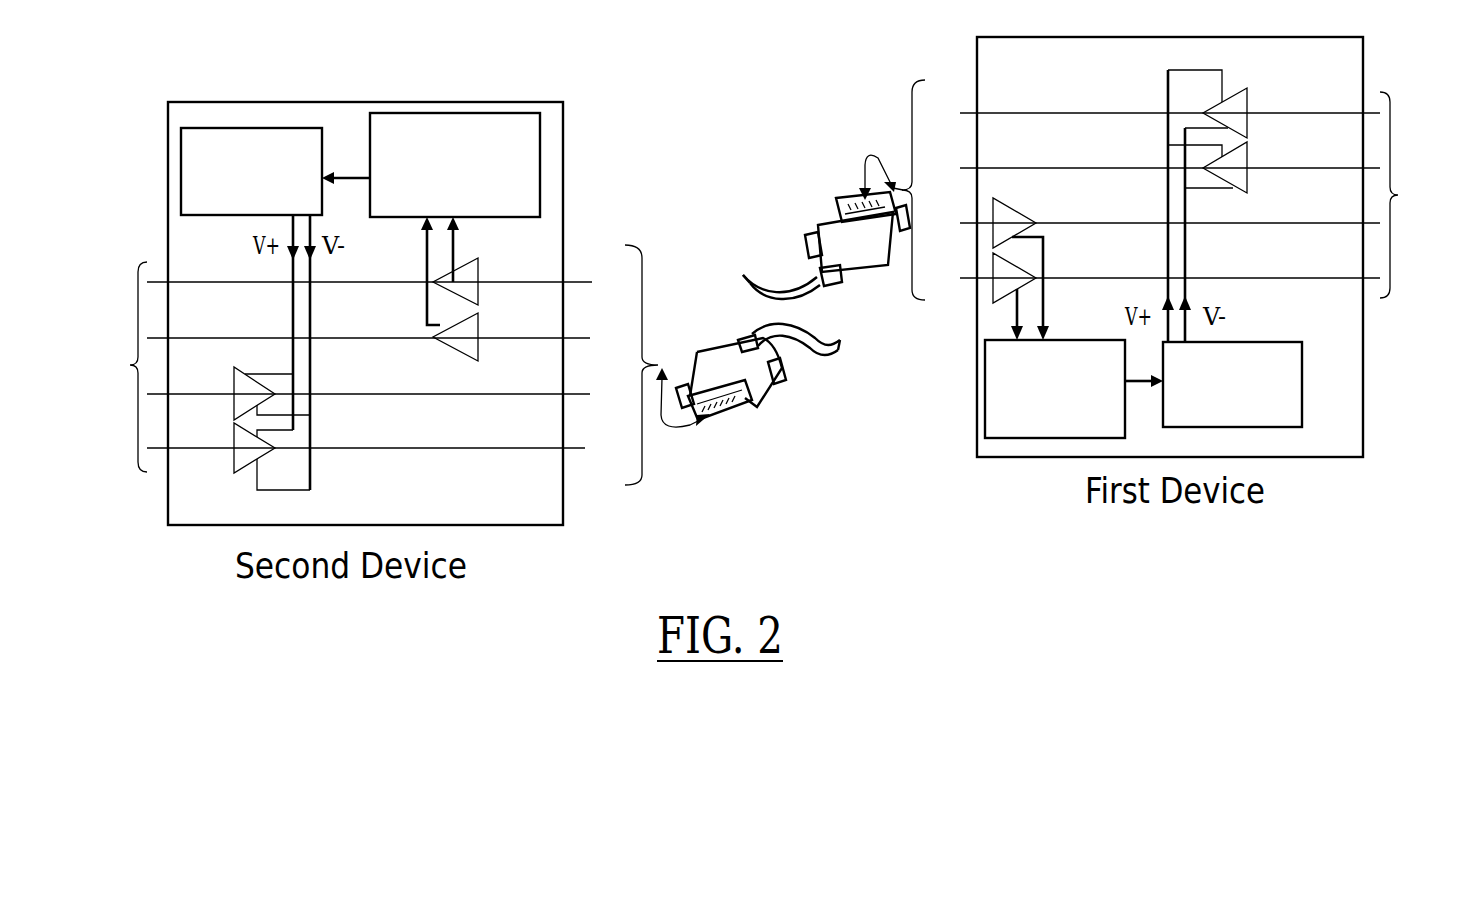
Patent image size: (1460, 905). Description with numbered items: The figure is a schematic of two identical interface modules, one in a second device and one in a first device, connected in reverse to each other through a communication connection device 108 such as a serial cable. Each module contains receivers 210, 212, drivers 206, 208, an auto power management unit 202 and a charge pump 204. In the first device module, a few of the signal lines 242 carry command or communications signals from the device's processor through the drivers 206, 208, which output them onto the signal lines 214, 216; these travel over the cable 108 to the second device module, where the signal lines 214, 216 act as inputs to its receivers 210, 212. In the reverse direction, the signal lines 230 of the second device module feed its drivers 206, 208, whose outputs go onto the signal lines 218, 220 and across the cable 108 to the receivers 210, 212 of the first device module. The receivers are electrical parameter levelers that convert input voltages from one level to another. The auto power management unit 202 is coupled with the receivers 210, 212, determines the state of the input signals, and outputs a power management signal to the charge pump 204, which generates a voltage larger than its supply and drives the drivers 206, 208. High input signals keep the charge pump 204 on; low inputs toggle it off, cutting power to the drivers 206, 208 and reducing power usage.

The communication connection device 108 is at (708, 320).
The auto power management unit 202 is at (386, 210).
The charge pump 204 is at (258, 194).
The driver 206 is at (238, 462).
The driver 208 is at (233, 386).
The receiver 210 is at (446, 340).
The receiver 212 is at (471, 262).
The signal line 214 is at (763, 197).
The signal line 216 is at (763, 253).
The signal line 218 is at (763, 308).
The signal line 220 is at (763, 363).
The signal lines of second device interface module 230 is at (118, 367).
The signal lines of first device interface module 242 is at (1410, 195).